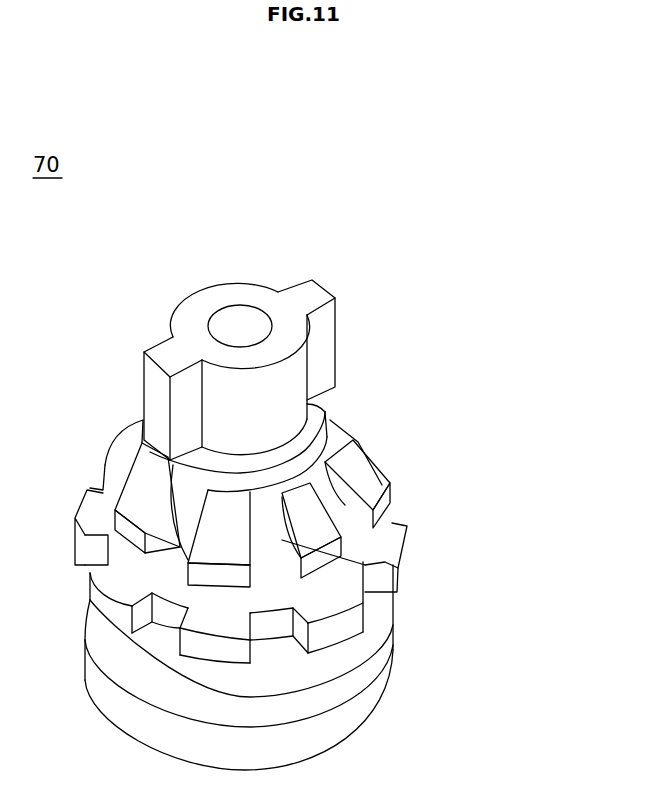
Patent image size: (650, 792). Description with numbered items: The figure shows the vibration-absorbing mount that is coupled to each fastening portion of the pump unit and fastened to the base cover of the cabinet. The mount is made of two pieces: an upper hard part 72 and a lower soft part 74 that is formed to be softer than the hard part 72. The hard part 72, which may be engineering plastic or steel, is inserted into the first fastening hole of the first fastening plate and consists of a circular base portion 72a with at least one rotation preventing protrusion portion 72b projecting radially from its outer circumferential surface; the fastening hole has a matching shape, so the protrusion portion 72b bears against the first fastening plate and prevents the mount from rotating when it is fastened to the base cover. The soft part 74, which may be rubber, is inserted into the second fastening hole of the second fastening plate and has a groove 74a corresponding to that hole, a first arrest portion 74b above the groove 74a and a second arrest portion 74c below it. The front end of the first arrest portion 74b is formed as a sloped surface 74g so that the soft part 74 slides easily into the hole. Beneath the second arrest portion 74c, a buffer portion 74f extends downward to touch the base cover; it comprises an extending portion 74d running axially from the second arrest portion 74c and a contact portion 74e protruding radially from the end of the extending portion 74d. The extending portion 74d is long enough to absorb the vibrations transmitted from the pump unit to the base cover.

The hard part 72 is at (308, 165).
The base portion 72a is at (227, 295).
The rotation preventing protrusion portion 72b is at (312, 293).
The soft part 74 is at (418, 462).
The groove 74a is at (340, 630).
The first arrest portion 74b is at (318, 586).
The second arrest portion 74c is at (347, 643).
The extending portion 74d is at (283, 664).
The contact portion 74e is at (327, 730).
The buffer portion 74f is at (509, 722).
The sloped surface 74g is at (335, 527).